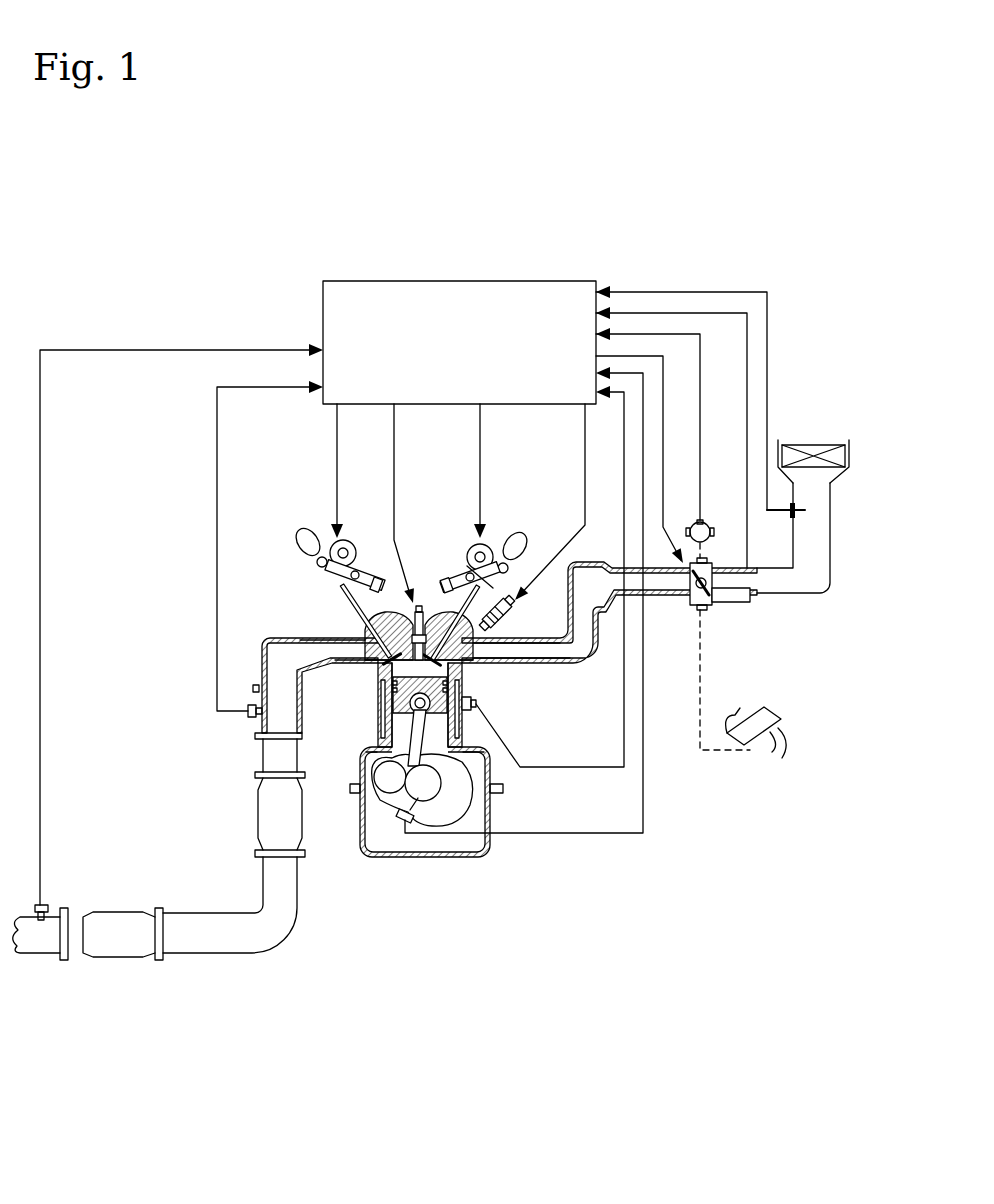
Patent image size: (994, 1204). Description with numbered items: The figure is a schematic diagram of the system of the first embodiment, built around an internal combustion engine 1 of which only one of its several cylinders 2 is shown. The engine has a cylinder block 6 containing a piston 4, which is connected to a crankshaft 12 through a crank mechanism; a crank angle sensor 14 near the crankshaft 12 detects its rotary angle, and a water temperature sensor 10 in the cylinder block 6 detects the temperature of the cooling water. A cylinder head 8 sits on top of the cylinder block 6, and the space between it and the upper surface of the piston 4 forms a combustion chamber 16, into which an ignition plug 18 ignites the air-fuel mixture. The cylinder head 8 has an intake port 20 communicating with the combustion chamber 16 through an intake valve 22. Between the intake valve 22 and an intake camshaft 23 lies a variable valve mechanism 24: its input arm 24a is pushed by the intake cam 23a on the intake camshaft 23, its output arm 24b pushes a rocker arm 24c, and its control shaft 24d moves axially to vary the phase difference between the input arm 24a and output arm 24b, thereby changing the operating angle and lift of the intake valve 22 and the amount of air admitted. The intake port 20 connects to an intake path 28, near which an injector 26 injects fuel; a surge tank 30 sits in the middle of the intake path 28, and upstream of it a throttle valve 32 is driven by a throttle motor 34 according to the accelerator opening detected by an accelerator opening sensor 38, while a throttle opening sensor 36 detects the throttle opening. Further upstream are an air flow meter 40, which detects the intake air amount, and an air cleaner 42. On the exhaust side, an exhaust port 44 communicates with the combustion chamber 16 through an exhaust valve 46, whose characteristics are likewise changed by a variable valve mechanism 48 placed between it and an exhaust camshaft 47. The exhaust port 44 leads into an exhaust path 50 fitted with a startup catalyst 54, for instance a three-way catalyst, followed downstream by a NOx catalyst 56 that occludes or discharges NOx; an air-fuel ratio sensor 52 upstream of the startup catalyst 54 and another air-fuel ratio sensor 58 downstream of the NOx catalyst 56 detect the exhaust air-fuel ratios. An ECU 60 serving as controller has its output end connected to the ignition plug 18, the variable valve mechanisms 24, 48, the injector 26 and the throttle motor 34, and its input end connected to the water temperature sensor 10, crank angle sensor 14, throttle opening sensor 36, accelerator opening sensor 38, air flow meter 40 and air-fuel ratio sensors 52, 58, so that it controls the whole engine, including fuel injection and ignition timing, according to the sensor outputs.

The internal combustion engine 1 is at (372, 873).
The cylinder 2 is at (380, 727).
The piston 4 is at (392, 705).
The cylinder block 6 is at (470, 752).
The cylinder head 8 is at (422, 612).
The water temperature sensor 10 is at (478, 703).
The crankshaft 12 is at (443, 797).
The crank angle sensor 14 is at (397, 807).
The combustion chamber 16 is at (383, 683).
The ignition plug 18 is at (392, 577).
The intake port 20 is at (463, 656).
The intake valve 22 is at (512, 645).
The intake camshaft 23 is at (492, 545).
The intake cam 23a is at (507, 560).
The variable valve mechanism 24 is at (460, 548).
The input arm 24a is at (512, 531).
The output arm 24b is at (525, 580).
The rocker arm 24c is at (455, 549).
The control shaft 24d is at (470, 545).
The injector 26 is at (506, 615).
The intake path 28 is at (590, 668).
The surge tank 30 is at (603, 562).
The throttle valve 32 is at (693, 600).
The throttle motor 34 is at (716, 592).
The throttle opening sensor 36 is at (707, 524).
The accelerator opening sensor 38 is at (708, 612).
The air flow meter 40 is at (787, 511).
The air cleaner 42 is at (815, 445).
The exhaust port 44 is at (302, 640).
The exhaust valve 46 is at (362, 659).
The exhaust camshaft 47 is at (312, 528).
The variable valve mechanism 48 is at (353, 526).
The exhaust path 50 is at (268, 640).
The air-fuel ratio sensor 52 is at (246, 716).
The startup catalyst 54 is at (258, 818).
The NOx catalyst 56 is at (110, 957).
The air-fuel ratio sensor 58 is at (47, 905).
The ECU 60 is at (451, 281).